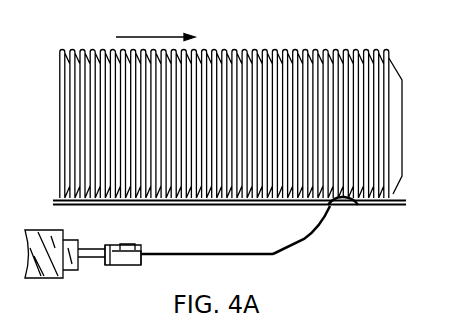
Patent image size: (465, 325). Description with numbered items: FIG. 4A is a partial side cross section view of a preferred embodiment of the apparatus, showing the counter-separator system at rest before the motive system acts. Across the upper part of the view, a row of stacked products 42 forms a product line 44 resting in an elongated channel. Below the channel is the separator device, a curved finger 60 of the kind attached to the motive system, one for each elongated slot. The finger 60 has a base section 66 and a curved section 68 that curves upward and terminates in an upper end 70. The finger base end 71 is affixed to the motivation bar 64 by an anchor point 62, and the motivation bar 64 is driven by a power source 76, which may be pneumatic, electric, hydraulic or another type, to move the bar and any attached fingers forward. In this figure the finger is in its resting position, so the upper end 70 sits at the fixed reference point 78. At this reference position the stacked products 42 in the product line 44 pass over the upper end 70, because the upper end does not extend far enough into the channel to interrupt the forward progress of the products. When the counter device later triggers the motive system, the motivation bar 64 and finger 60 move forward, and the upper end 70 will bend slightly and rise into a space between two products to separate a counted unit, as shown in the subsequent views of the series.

The stacked products 42 is at (52, 113).
The product line 44 is at (306, 42).
The curved fingers 60 is at (235, 248).
The anchor point 62 is at (128, 245).
The motivation bar 64 is at (129, 260).
The base section 66 is at (190, 249).
The curved section 68 is at (290, 239).
The upper end 70 is at (342, 198).
The finger base end 71 is at (106, 240).
The power source 76 is at (47, 224).
The fixed reference point 78 is at (326, 206).